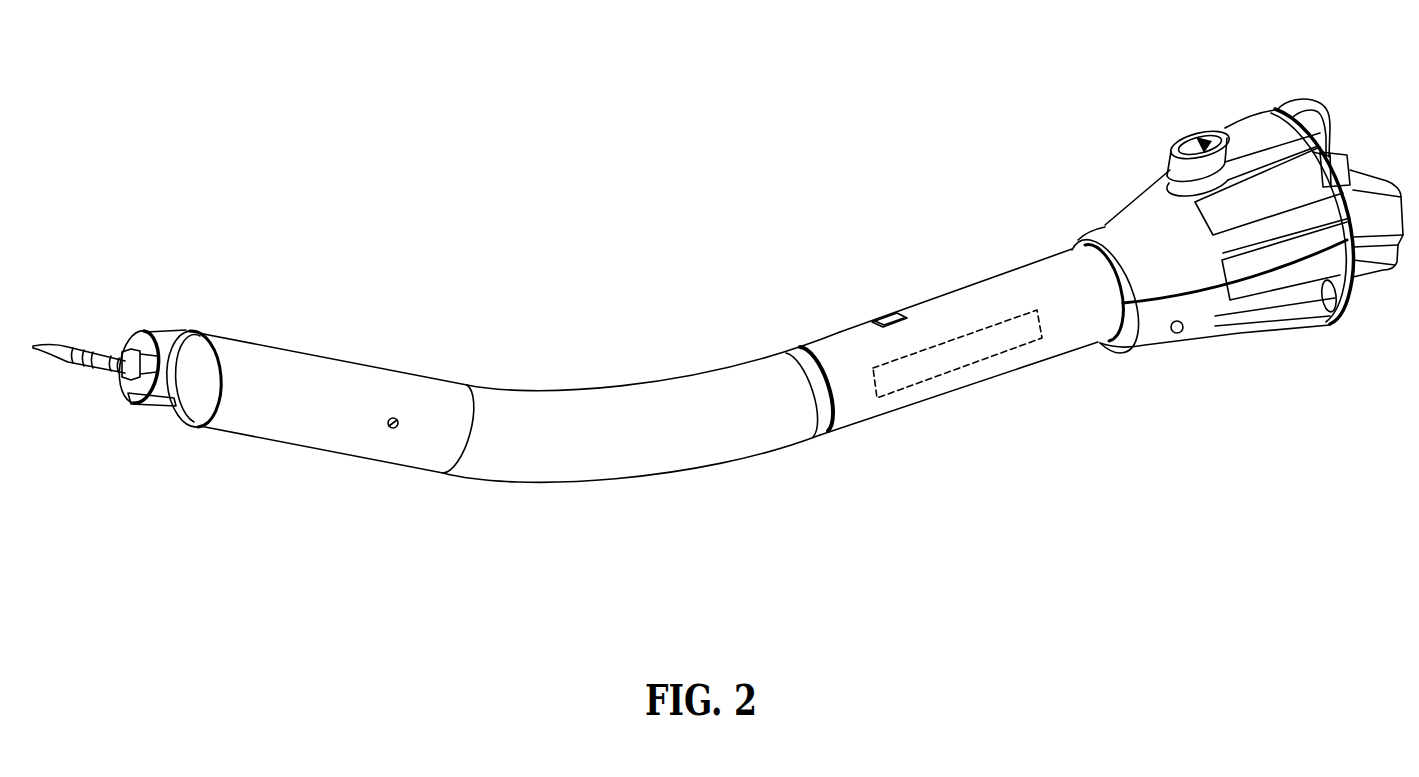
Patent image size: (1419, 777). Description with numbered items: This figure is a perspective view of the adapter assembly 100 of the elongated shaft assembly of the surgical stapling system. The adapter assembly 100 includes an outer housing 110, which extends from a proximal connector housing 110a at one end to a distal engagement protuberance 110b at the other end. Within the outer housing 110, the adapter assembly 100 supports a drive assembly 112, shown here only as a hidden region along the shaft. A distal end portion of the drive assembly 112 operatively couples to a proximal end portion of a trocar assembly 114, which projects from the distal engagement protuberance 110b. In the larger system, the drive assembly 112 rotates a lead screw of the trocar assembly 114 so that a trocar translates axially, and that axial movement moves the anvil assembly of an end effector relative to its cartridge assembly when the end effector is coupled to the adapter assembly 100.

The adapter assembly 100 is at (856, 268).
The outer housing 110 is at (993, 292).
The proximal connector housing 110a is at (1245, 143).
The distal engagement protuberance 110b is at (143, 328).
The drive assembly 112 is at (993, 362).
The trocar assembly 114 is at (100, 350).